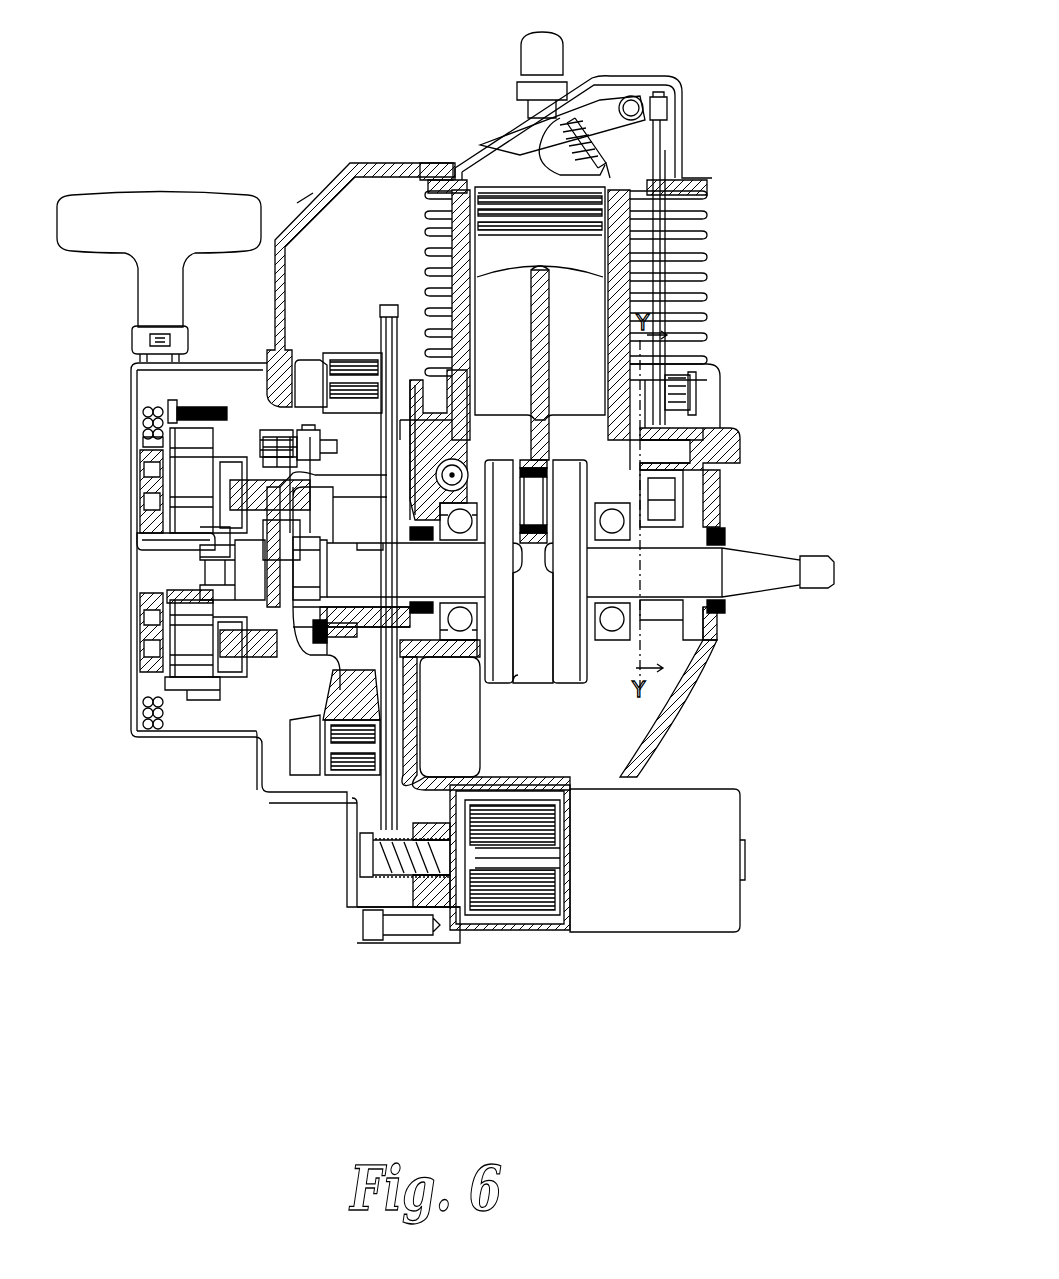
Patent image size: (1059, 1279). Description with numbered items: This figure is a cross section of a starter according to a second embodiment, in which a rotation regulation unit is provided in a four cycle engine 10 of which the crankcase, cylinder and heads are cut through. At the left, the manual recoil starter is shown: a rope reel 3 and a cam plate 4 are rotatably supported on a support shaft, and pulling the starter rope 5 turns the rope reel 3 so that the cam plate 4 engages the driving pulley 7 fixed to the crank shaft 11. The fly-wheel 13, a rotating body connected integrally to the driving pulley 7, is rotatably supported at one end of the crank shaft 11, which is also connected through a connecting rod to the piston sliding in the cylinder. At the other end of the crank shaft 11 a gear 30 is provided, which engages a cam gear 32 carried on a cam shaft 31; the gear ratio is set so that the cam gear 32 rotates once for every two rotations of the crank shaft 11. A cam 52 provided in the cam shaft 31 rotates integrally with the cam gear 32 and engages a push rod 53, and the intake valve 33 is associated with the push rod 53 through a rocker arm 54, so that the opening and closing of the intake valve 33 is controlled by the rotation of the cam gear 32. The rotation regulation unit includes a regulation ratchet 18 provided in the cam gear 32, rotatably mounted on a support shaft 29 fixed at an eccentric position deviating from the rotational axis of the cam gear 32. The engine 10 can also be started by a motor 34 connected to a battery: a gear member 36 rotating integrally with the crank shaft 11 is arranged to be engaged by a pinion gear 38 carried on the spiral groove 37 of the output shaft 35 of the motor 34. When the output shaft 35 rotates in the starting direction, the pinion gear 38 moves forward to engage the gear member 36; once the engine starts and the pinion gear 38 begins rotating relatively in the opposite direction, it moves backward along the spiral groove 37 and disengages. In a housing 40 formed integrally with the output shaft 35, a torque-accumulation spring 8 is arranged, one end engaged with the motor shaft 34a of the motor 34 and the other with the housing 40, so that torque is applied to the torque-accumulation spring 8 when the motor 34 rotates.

The rope reel 3 is at (183, 402).
The cam plate 4 is at (187, 680).
The starter rope 5 is at (148, 418).
The driving pulley 7 is at (270, 660).
The torque-accumulation spring 8 is at (140, 708).
The crankcase 10 is at (685, 690).
The crank shaft 11 is at (445, 578).
The fly-wheel 13 is at (392, 683).
The regulation ratchet 18 is at (675, 367).
The support shaft 29 is at (673, 385).
The gear 30 is at (668, 617).
The cam shaft 31 is at (715, 448).
The cam gear 32 is at (655, 483).
The intake valve 33 is at (582, 238).
The motor 34 is at (683, 818).
The motor shaft 34a is at (560, 887).
The output shaft 35 is at (400, 855).
The gear member 36 is at (283, 688).
The spiral groove 37 is at (380, 905).
The pinion gear 38 is at (433, 883).
The housing 40 is at (490, 912).
The cam 52 is at (690, 495).
The push rod 53 is at (662, 152).
The rocker arm 54 is at (610, 112).